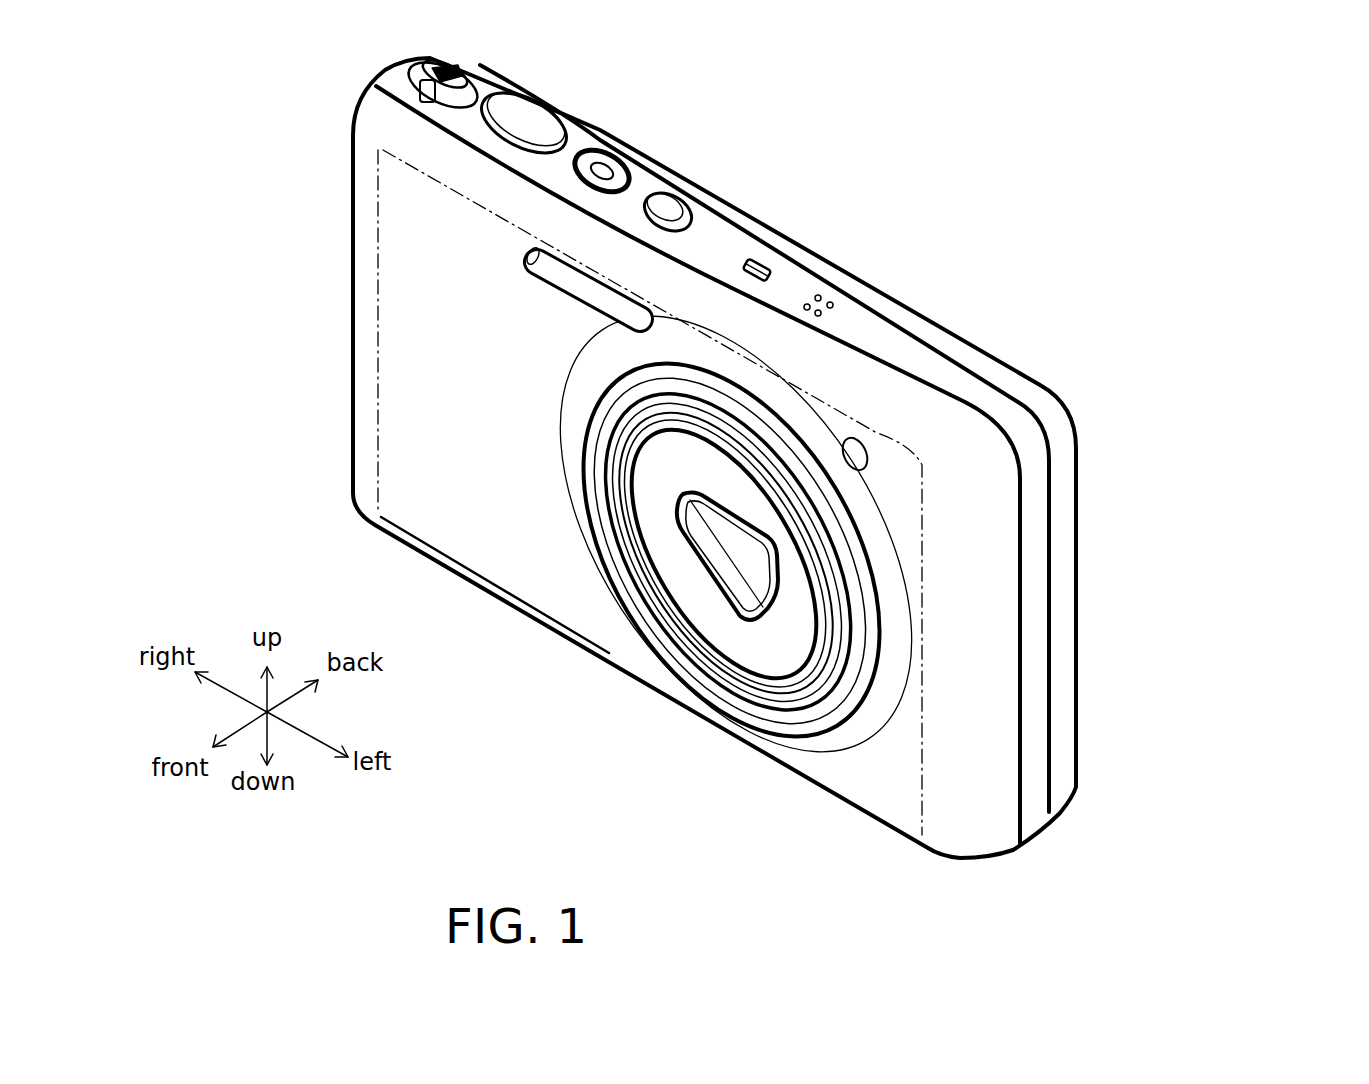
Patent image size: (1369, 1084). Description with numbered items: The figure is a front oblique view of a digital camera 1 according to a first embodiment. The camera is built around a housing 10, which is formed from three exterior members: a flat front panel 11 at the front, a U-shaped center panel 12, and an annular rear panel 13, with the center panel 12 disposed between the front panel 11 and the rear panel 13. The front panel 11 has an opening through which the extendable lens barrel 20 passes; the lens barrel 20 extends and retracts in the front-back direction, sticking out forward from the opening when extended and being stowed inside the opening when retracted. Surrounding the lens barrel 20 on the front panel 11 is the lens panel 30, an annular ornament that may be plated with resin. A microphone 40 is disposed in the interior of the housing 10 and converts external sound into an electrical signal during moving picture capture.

The digital camera 1 is at (950, 212).
The housing 10 is at (1227, 475).
The front panel 11 is at (990, 712).
The center panel 12 is at (1035, 657).
The rear panel 13 is at (1060, 590).
The lens barrel 20 is at (697, 617).
The lens panel 30 is at (833, 757).
The microphone 40 is at (748, 253).